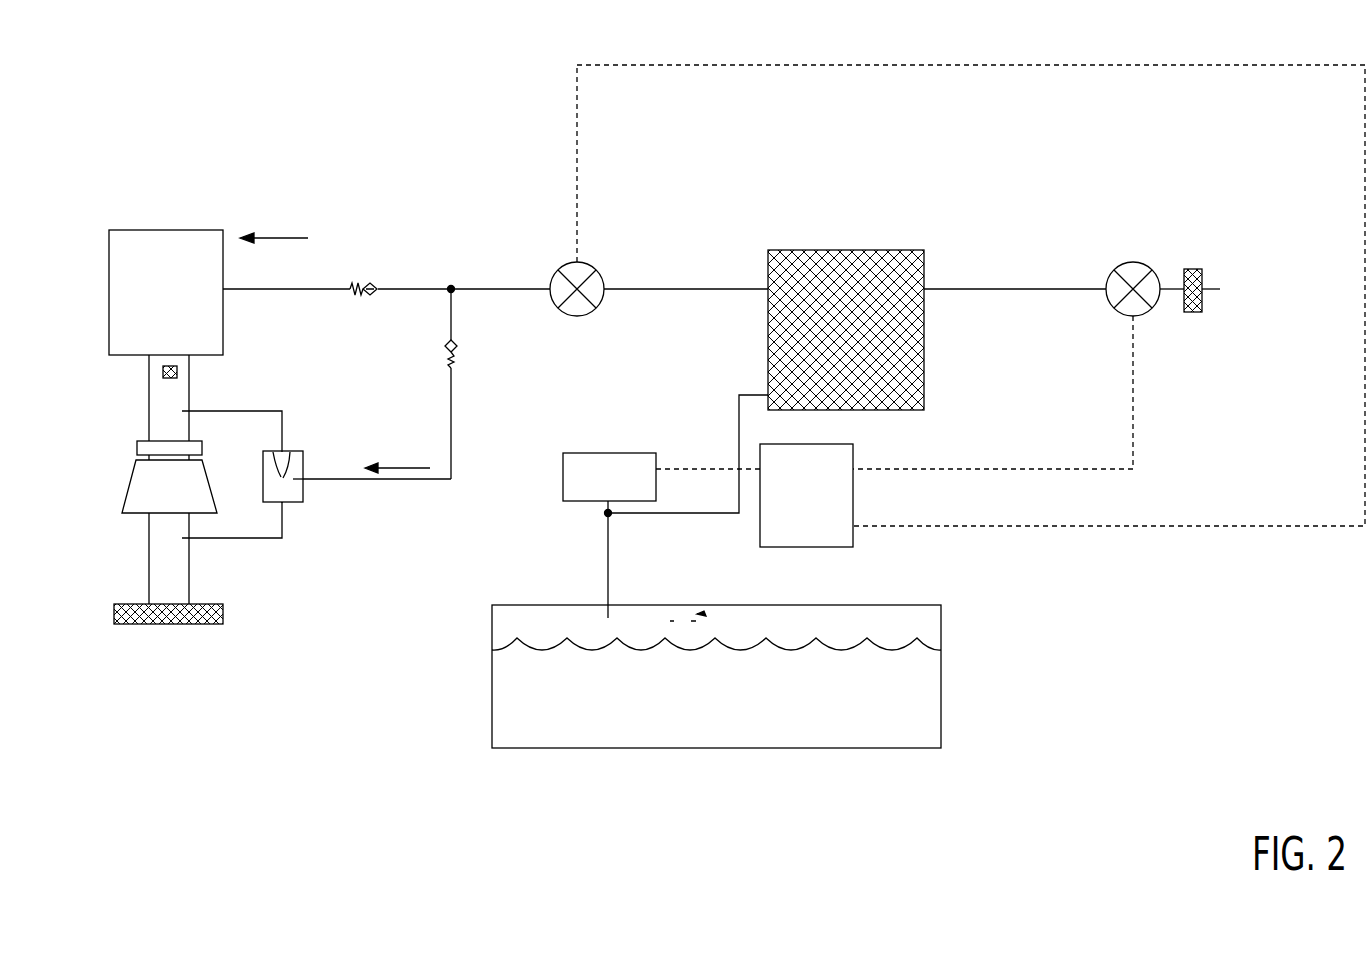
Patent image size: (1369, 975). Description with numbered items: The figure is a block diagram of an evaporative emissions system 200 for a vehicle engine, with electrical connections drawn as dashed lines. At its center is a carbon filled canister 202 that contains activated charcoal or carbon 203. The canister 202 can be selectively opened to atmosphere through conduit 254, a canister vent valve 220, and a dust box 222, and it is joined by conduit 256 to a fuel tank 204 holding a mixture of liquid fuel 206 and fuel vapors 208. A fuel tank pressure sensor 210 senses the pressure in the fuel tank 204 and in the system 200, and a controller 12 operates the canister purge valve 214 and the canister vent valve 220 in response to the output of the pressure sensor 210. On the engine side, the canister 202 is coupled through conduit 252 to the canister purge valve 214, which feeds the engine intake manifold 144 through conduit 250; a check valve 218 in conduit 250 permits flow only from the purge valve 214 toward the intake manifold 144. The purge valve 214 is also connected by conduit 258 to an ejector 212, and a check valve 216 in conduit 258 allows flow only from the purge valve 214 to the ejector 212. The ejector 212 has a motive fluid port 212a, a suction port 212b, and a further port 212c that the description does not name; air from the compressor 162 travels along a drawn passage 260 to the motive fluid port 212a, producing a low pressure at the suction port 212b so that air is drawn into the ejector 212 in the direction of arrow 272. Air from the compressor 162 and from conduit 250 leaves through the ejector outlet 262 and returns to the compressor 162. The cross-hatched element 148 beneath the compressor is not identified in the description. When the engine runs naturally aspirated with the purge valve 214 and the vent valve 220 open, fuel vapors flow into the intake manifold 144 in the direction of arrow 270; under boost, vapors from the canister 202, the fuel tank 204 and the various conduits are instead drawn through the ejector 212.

The evaporative emissions system 200 is at (197, 126).
The engine intake manifold 144 is at (184, 301).
The compressor 162 is at (180, 373).
The base / exhaust outlet 148 is at (120, 617).
The conduit 260 is at (192, 411).
The ejector outlet 262 is at (206, 540).
The ejector 212 is at (322, 479).
The motive fluid port 212a is at (284, 451).
The suction port 212b is at (294, 479).
The third valve port 212c is at (284, 503).
The arrow 272 is at (400, 467).
The conduit 250 is at (240, 289).
The arrow 270 is at (295, 220).
The check valve 218 is at (363, 285).
The conduit 258 is at (451, 406).
The check valve 216 is at (457, 349).
The canister purge valve 214 is at (590, 266).
The conduit 252 is at (681, 289).
The carbon filled canister 202 is at (879, 304).
The activated charcoal or carbon 203 is at (908, 335).
The conduit 254 is at (1070, 289).
The canister vent valve 220 is at (1128, 263).
The dust box 222 is at (1193, 269).
The controller 12 is at (820, 504).
The fuel tank pressure sensor 210 is at (566, 487).
The conduit 256 is at (750, 394).
The fuel tank 204 is at (941, 612).
The liquid fuel 206 is at (927, 727).
The fuel vapors 208 is at (703, 614).